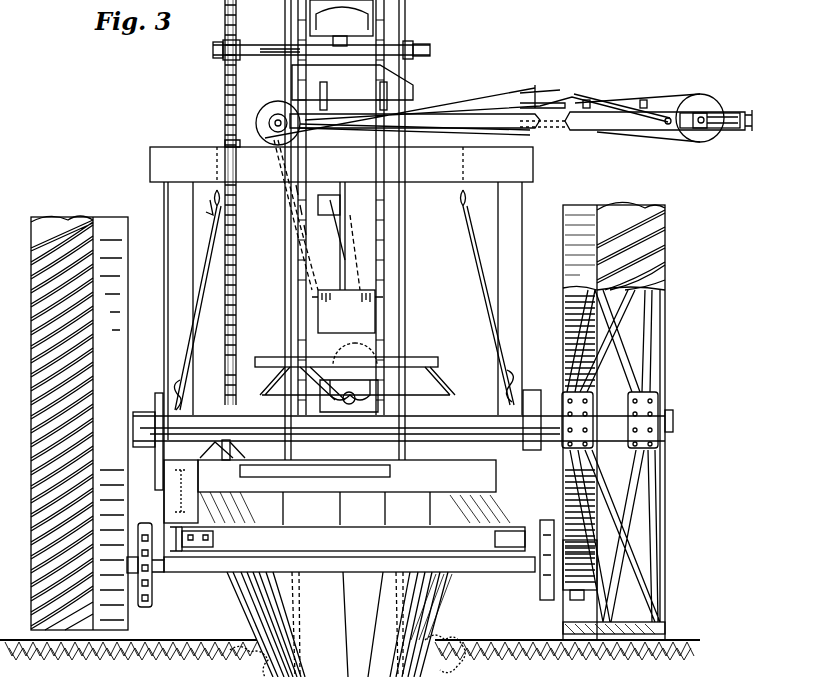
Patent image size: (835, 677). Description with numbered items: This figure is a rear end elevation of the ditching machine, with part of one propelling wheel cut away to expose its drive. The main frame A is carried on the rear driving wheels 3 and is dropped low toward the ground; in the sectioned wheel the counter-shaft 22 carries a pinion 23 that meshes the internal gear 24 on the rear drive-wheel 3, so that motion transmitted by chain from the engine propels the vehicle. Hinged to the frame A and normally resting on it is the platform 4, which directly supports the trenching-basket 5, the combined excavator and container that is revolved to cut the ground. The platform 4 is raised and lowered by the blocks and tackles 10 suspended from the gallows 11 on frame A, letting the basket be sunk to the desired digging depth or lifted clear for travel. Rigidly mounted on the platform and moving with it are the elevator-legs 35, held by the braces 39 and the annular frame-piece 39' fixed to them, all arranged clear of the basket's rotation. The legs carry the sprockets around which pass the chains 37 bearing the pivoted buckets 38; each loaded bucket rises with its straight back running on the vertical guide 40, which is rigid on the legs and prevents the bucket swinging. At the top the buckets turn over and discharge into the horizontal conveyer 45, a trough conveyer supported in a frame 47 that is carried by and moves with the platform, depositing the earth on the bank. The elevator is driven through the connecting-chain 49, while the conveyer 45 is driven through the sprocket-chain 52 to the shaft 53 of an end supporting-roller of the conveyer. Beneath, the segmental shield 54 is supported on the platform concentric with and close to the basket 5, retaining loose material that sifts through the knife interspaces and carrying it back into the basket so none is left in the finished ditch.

The rear driving wheel 3 is at (40, 470).
The platform 4 is at (456, 472).
The trenching-basket 5 is at (337, 624).
The blocks and tackles 10 is at (212, 254).
The gallows 11 is at (341, 161).
The counter-shaft 22 is at (220, 572).
The pinion 23 is at (590, 565).
The internal gear 24 is at (566, 486).
The elevator-leg 35 is at (404, 318).
The chain 37 is at (322, 241).
The bucket 38 is at (347, 311).
The brace 39 is at (320, 379).
The annular frame-piece 39' is at (351, 364).
The vertical guide 40 is at (350, 225).
The horizontal conveyer 45 is at (622, 110).
The frame 47 is at (608, 128).
The connecting-chain 49 is at (224, 98).
The sprocket-chain 52 is at (278, 232).
The shaft 53 is at (278, 130).
The segmental shield 54 is at (452, 600).
The frame A is at (347, 540).